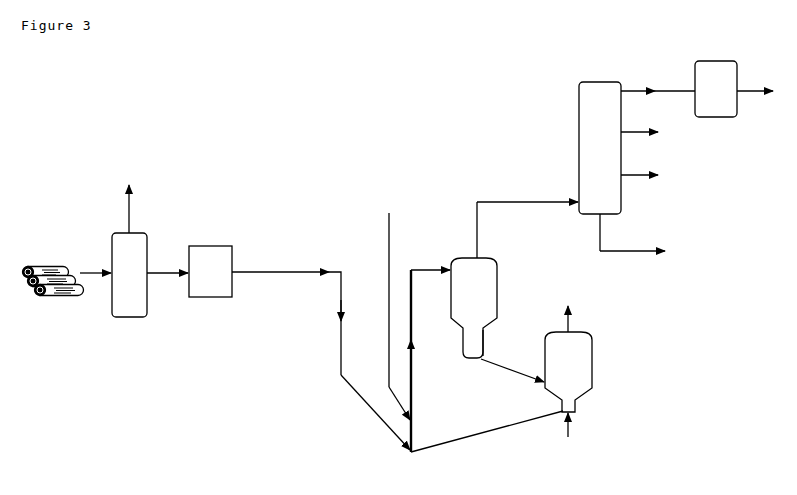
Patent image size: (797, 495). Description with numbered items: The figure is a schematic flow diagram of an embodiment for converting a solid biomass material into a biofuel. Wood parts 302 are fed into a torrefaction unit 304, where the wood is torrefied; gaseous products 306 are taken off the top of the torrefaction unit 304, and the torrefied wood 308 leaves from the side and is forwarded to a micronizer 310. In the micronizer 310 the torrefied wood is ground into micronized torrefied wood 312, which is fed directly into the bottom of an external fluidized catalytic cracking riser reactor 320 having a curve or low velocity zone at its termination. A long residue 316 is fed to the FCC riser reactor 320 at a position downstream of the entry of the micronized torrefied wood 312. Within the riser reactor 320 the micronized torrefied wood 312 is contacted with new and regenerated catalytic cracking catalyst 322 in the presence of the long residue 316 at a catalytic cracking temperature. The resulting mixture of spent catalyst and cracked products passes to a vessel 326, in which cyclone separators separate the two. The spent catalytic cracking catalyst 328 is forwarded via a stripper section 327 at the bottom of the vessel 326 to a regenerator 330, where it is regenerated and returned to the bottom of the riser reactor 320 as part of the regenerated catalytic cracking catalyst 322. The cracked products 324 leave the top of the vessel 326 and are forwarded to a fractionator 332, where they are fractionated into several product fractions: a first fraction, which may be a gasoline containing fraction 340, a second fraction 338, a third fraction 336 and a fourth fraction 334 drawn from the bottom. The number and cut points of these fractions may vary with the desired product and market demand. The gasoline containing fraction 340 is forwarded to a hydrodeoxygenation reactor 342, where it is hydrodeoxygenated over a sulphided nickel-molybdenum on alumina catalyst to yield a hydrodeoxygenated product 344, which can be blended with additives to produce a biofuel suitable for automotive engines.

The wood parts 302 is at (58, 299).
The torrefaction unit 304 is at (130, 317).
The gaseous products 306 is at (129, 204).
The torrefied wood 308 is at (176, 273).
The micronizer 310 is at (215, 297).
The micronized torrefied wood 312 is at (264, 272).
The long residue 316 is at (389, 236).
The external fluidized catalytic cracking riser reactor 320 is at (410, 438).
The new and regenerated catalytic cracking catalyst 322 is at (478, 435).
The cracked products 324 is at (477, 219).
The vessel 326 is at (497, 277).
The stripper section 327 is at (483, 338).
The spent catalytic cracking catalyst 328 is at (505, 370).
The regenerator 330 is at (592, 351).
The fractionator 332 is at (579, 126).
The fourth fraction 334 is at (643, 251).
The third fraction 336 is at (642, 175).
The second fraction 338 is at (642, 132).
The gasoline containing fraction 340 is at (642, 91).
The hydrodeoxygenation reactor 342 is at (716, 117).
The hydrodeoxygenated product 344 is at (758, 91).